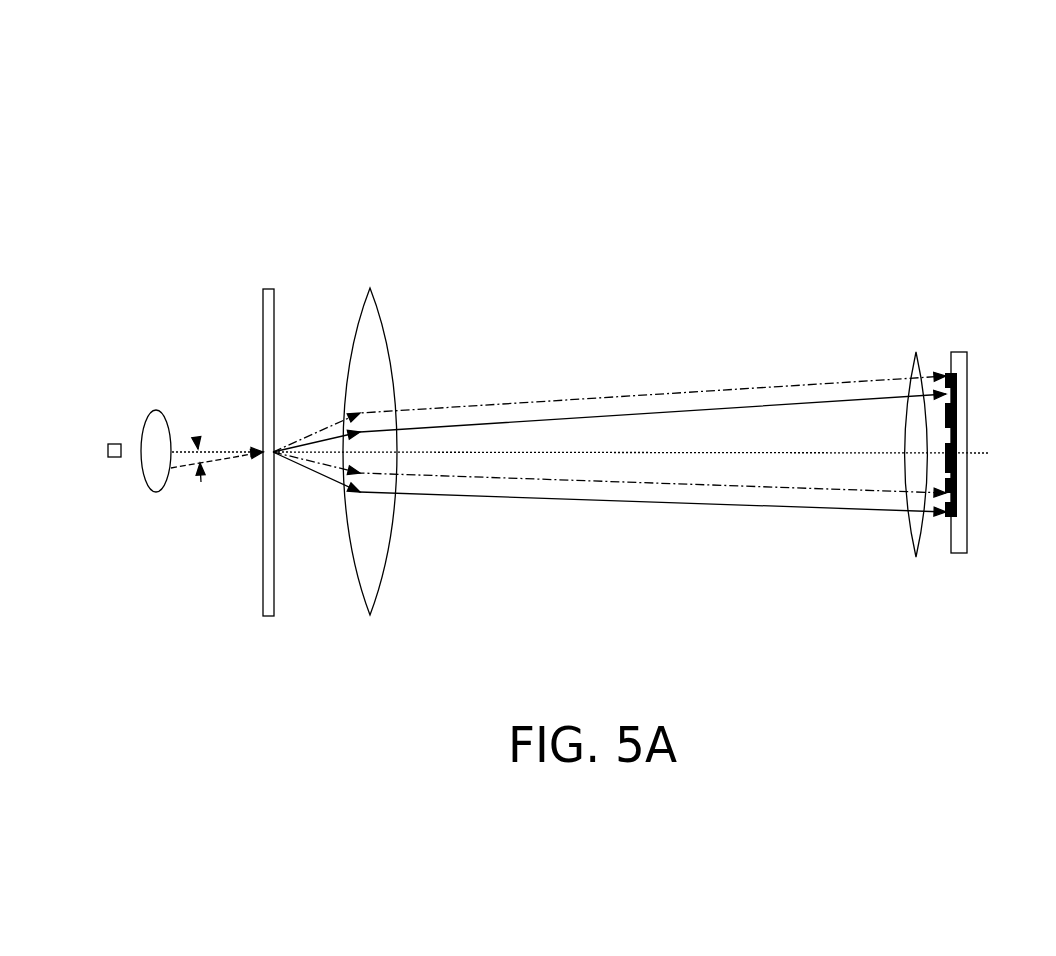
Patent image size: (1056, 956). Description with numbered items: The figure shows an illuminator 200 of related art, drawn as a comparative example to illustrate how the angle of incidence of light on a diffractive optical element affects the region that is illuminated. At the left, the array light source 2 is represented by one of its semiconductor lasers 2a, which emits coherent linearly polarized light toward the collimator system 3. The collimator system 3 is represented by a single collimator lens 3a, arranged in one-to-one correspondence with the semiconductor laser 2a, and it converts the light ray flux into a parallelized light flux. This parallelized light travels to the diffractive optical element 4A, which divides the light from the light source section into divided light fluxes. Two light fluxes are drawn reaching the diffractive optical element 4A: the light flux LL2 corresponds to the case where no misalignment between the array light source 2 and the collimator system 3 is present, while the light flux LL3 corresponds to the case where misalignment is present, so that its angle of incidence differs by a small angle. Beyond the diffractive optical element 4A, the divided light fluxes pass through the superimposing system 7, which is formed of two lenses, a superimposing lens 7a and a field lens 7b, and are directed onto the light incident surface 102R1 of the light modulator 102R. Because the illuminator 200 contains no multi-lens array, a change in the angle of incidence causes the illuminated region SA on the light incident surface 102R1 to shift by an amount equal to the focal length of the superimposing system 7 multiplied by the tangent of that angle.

The illuminator 200 is at (965, 188).
The array light source 2 is at (115, 424).
The semiconductor laser 2a is at (107, 452).
The collimator system 3 is at (157, 399).
The collimator lens 3a is at (152, 489).
The light flux LL2 is at (236, 448).
The light flux LL3 is at (212, 462).
The diffractive optical element 4A is at (275, 270).
The superimposing system 7 is at (940, 218).
The superimposing lens 7a is at (370, 288).
The field lens 7b is at (914, 352).
The illuminated region SA is at (933, 377).
The light modulator 102R is at (960, 540).
The light incident surface 102R1 is at (951, 530).